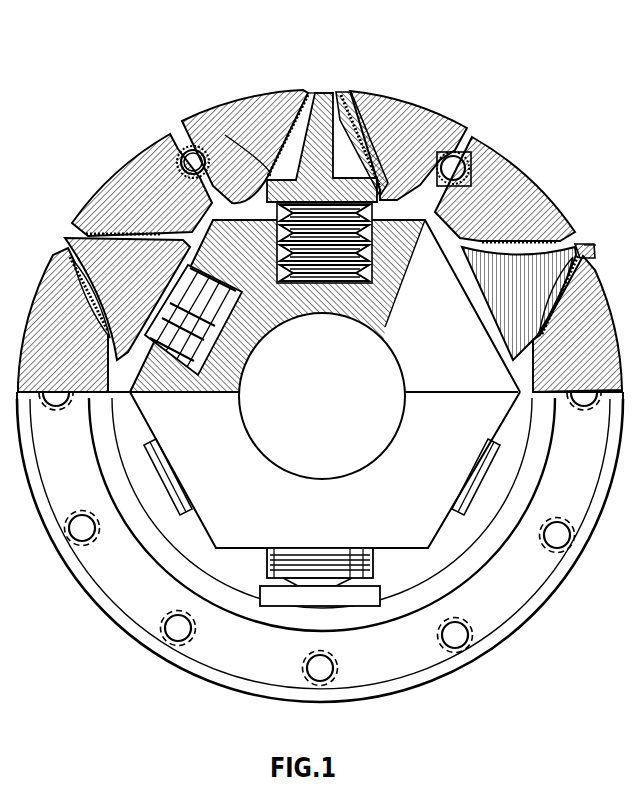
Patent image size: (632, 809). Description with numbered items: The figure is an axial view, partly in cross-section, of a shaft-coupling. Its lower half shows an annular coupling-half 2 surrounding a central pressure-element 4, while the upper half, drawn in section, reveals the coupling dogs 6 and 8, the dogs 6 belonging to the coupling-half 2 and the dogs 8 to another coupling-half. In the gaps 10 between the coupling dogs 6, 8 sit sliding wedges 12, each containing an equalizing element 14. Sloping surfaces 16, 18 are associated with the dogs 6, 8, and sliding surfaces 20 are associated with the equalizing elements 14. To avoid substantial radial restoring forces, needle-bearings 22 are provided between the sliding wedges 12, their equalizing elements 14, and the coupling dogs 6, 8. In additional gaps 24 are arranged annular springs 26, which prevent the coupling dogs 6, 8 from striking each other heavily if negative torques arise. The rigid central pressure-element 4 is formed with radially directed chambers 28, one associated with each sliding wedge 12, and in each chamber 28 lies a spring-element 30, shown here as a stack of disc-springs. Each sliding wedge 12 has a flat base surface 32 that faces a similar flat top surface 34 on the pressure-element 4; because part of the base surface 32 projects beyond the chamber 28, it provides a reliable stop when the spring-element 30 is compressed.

The annular coupling-half 2 is at (500, 617).
The central pressure-element 4 is at (392, 527).
The coupling dogs 6 is at (96, 204).
The coupling dogs 8 is at (245, 145).
The gaps 10 is at (314, 82).
The sliding wedges 12 is at (347, 140).
The equalizing elements 14 is at (353, 122).
The sloping surfaces 16 is at (420, 125).
The sloping surfaces 18 is at (213, 120).
The sliding surfaces 20 is at (518, 243).
The needle-bearings 22 is at (97, 204).
The additional gaps 24 is at (165, 120).
The annular springs 26 is at (176, 156).
The radially directed chambers 28 is at (484, 232).
The spring-element 30 is at (295, 170).
The flat base surface 32 is at (445, 148).
The flat top surface 34 is at (458, 188).